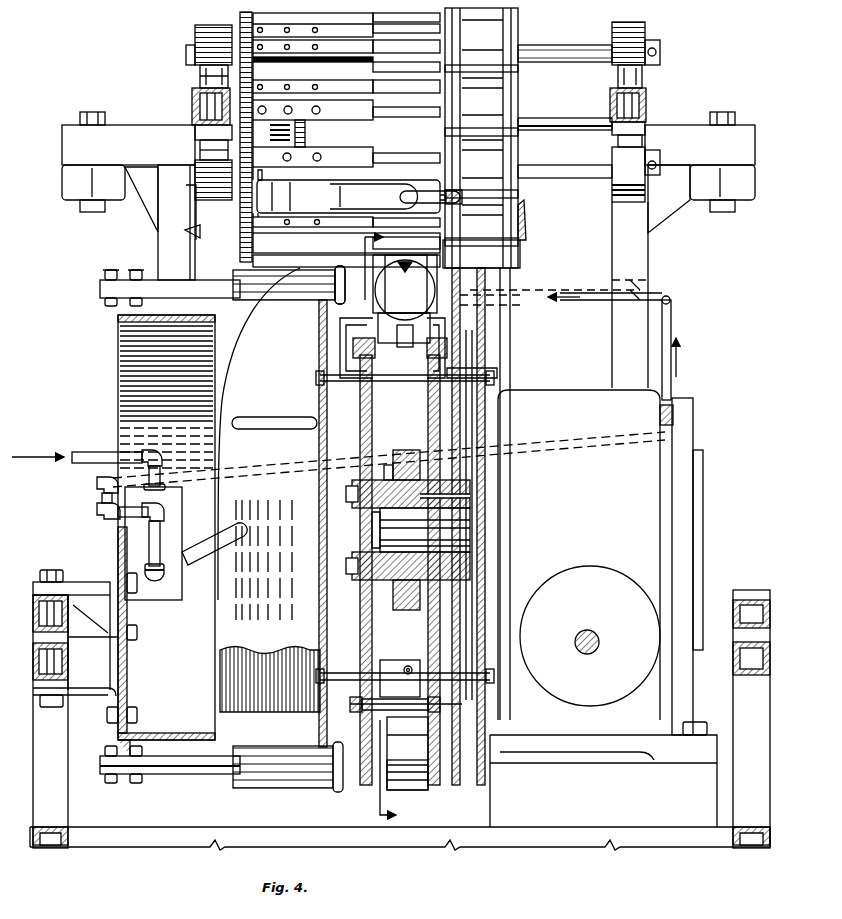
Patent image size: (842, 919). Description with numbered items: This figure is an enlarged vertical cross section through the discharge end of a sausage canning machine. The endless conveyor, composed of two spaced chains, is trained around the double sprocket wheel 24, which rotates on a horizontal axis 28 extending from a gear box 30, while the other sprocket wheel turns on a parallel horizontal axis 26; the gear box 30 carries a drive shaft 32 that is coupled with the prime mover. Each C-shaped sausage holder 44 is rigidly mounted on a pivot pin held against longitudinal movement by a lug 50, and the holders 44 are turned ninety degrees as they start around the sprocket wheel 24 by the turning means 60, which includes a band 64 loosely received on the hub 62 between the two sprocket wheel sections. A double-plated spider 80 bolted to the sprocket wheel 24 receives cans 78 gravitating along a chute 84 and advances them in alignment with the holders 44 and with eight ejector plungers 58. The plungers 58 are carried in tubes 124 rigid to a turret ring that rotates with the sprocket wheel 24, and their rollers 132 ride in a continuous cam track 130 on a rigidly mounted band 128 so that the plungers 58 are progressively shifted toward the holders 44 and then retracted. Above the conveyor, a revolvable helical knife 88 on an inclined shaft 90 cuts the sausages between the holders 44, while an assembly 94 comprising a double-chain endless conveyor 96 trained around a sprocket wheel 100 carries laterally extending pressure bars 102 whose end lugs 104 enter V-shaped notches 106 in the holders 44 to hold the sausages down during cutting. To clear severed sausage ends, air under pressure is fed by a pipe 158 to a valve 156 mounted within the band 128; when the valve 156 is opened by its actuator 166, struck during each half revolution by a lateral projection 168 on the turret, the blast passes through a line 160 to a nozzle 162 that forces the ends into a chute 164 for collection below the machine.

The sprocket wheel 24 is at (362, 636).
The horizontal axis 26 is at (318, 733).
The horizontal axis 28 is at (390, 538).
The gear box 30 is at (548, 388).
The drive shaft 32 is at (582, 632).
The sausage holder 44 is at (338, 280).
The second lug 50 is at (380, 663).
The ejector plunger 58 is at (216, 284).
The turning means 60 is at (398, 608).
The hub 62 is at (416, 508).
The band 64 is at (405, 450).
The can 78 is at (490, 102).
The double-plated spider 80 is at (478, 786).
The chute 84 is at (514, 36).
The helical knife 88 is at (522, 225).
The shaft 90 is at (463, 197).
The assembly 94 is at (236, 21).
The endless conveyor 96 is at (228, 60).
The sprocket wheel 100 is at (240, 212).
The pressure bar 102 is at (330, 202).
The lug 104 is at (386, 148).
The V-shaped notch 106 is at (398, 790).
The tube 124 is at (317, 300).
The band 128 is at (130, 376).
The cam track 130 is at (111, 306).
The roller 132 is at (101, 300).
The valve 156 is at (166, 594).
The pipe 158 is at (92, 454).
The line 160 is at (670, 327).
The nozzle 162 is at (392, 300).
The chute 164 is at (224, 690).
The actuator 166 is at (208, 540).
The lateral projection 168 is at (262, 417).